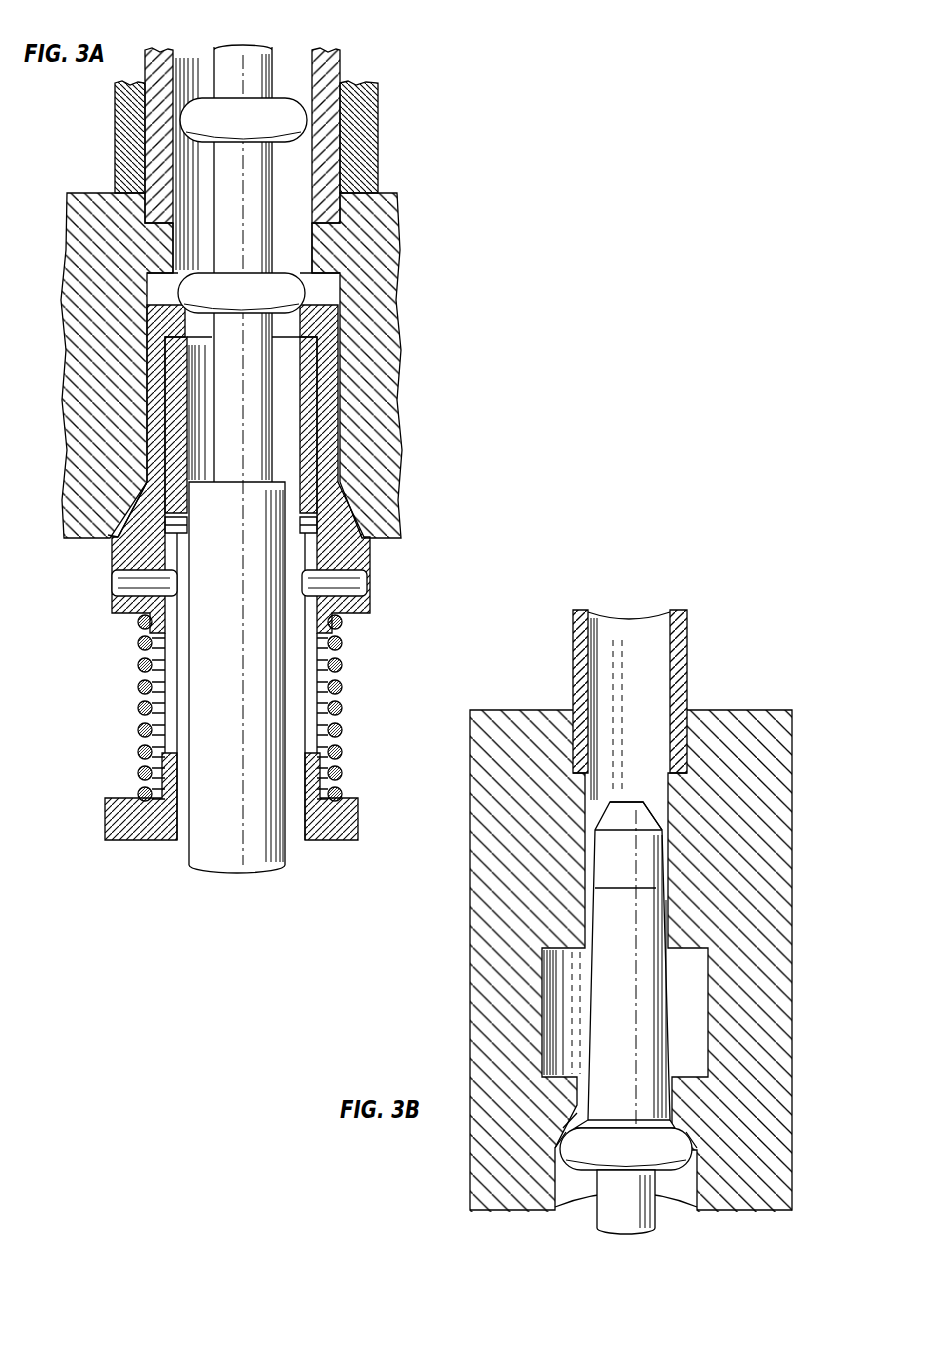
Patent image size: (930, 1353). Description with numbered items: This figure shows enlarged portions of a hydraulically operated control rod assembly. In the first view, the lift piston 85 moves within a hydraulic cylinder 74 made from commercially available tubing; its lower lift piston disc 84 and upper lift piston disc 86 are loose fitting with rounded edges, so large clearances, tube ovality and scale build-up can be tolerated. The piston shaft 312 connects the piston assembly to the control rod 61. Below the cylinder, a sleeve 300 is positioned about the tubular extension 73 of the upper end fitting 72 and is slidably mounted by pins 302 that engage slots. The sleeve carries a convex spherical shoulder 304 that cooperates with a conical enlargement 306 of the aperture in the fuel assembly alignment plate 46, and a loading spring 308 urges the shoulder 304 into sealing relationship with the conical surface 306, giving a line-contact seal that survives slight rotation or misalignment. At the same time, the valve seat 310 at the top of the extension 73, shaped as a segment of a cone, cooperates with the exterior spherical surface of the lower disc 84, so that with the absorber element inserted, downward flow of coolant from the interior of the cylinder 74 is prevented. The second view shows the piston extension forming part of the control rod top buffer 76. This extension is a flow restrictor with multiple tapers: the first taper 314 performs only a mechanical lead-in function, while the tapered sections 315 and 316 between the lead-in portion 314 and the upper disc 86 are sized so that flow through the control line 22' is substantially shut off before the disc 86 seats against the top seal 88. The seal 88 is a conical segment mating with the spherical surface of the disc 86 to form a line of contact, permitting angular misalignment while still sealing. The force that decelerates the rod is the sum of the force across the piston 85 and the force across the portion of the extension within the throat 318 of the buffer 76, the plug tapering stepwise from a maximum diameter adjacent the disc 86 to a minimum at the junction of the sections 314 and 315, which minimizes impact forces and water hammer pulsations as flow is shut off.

In FIG. 3A, the hydraulic cylinder 74 is at (340, 65).
In FIG. 3A, the upper lift piston disc 86 is at (262, 134).
In FIG. 3B, the upper lift piston disc 86 is at (641, 1164).
In FIG. 3A, the piston 85 is at (272, 210).
In FIG. 3A, the valve seat 310 is at (288, 300).
In FIG. 3A, the lower lift piston disc 84 is at (262, 309).
In FIG. 3A, the fuel assembly alignment plate 46 is at (385, 312).
In FIG. 3A, the piston shaft 312 is at (240, 385).
In FIG. 3A, the sleeve 300 is at (327, 407).
In FIG. 3A, the tubular extension 73 is at (303, 467).
In FIG. 3A, the convex spherical shoulder 304 is at (108, 535).
In FIG. 3A, the conical enlargement 306 is at (125, 507).
In FIG. 3A, the pins 302 is at (112, 582).
In FIG. 3A, the loading spring 308 is at (342, 682).
In FIG. 3A, the upper end fitting 72 is at (340, 798).
In FIG. 3A, the control rod 61 is at (236, 849).
In FIG. 3B, the control line 22' is at (661, 702).
In FIG. 3B, the first taper 314 is at (648, 815).
In FIG. 3B, the second taper 315 is at (610, 858).
In FIG. 3B, the control rod top buffer 76 is at (795, 922).
In FIG. 3B, the third taper 316 is at (623, 997).
In FIG. 3B, the throat 318 is at (578, 1097).
In FIG. 3B, the top seal 88 is at (587, 1165).